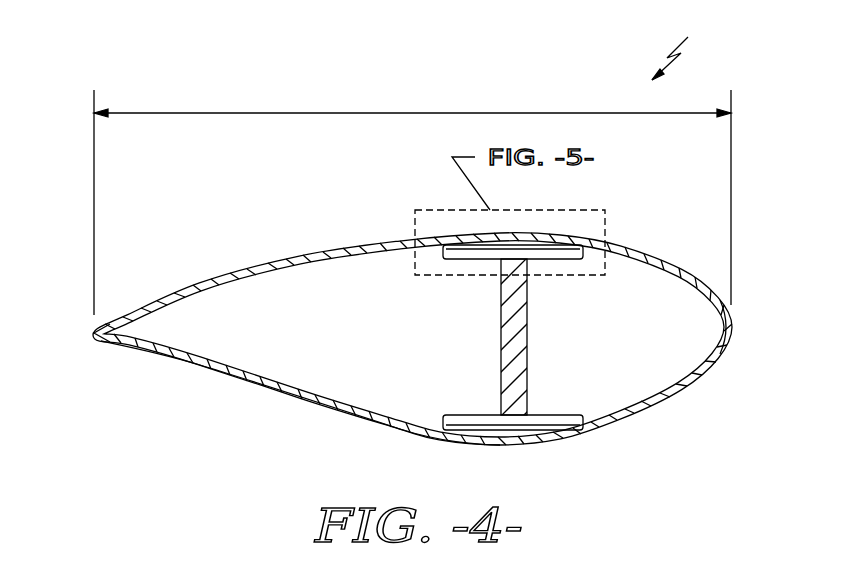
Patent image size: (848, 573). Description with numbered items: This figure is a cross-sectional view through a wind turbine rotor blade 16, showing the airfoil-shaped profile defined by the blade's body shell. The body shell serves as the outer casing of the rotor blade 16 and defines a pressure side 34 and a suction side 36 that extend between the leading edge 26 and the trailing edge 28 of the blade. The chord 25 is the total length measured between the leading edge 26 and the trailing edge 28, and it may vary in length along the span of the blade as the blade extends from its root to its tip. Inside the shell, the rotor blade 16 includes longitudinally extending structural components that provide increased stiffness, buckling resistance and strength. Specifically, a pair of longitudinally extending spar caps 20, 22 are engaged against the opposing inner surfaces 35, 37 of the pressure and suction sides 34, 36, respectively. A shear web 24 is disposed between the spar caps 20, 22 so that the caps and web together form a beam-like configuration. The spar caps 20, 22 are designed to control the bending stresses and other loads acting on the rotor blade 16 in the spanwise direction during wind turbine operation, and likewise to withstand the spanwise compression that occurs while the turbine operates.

The rotor blade 16 is at (687, 44).
The spar cap 20 is at (555, 250).
The spar cap 22 is at (552, 425).
The shear web 24 is at (527, 378).
The chord 25 is at (306, 113).
The leading edge 26 is at (732, 327).
The trailing edge 28 is at (90, 337).
The pressure side 34 is at (330, 410).
The inner surface of pressure side 35 is at (250, 372).
The suction side 36 is at (340, 250).
The inner surface of suction side 37 is at (312, 263).